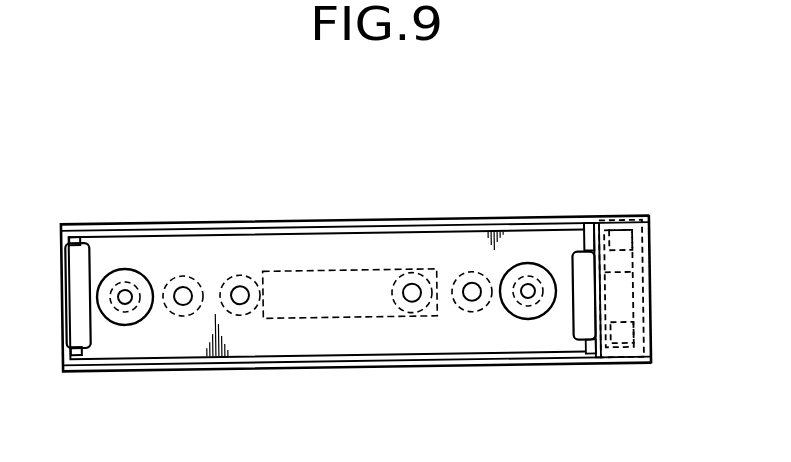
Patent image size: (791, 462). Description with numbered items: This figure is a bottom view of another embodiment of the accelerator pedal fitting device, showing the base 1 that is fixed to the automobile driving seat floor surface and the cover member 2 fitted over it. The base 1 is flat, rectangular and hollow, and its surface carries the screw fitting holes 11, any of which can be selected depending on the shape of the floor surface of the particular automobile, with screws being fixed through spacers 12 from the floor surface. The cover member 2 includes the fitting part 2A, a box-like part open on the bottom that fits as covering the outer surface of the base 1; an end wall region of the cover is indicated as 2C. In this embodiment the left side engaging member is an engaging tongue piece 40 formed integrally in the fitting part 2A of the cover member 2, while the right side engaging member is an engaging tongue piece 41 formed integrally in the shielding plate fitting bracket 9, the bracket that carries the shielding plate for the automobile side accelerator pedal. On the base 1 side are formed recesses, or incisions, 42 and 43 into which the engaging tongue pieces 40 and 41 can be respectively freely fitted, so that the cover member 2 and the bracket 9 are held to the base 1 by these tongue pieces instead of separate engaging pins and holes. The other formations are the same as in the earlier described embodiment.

The base 1 is at (275, 347).
The cover member 2 is at (337, 218).
The fitting part 2A is at (125, 369).
The case end wall 2C is at (642, 310).
The shielding plate fitting bracket 9 is at (633, 260).
The screw fitting hole 11 is at (126, 296).
The spacer 12 is at (145, 313).
The engaging tongue piece 40 is at (89, 258).
The engaging tongue piece 41 is at (572, 322).
The recess 42 is at (80, 236).
The recess 43 is at (575, 250).